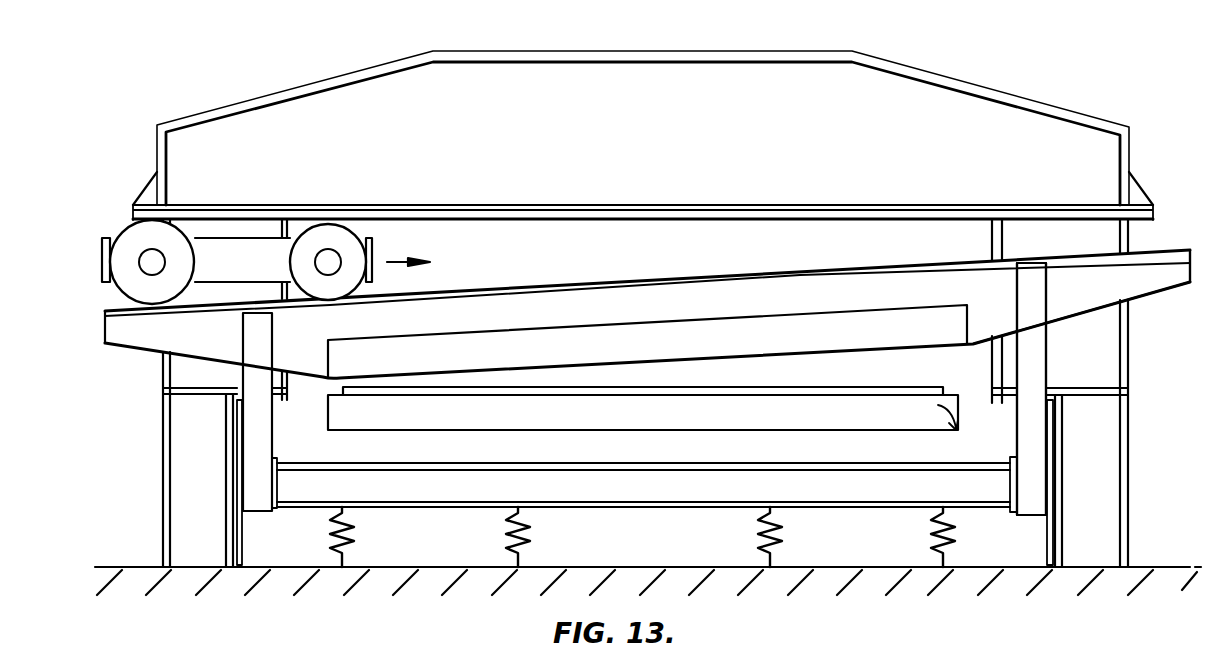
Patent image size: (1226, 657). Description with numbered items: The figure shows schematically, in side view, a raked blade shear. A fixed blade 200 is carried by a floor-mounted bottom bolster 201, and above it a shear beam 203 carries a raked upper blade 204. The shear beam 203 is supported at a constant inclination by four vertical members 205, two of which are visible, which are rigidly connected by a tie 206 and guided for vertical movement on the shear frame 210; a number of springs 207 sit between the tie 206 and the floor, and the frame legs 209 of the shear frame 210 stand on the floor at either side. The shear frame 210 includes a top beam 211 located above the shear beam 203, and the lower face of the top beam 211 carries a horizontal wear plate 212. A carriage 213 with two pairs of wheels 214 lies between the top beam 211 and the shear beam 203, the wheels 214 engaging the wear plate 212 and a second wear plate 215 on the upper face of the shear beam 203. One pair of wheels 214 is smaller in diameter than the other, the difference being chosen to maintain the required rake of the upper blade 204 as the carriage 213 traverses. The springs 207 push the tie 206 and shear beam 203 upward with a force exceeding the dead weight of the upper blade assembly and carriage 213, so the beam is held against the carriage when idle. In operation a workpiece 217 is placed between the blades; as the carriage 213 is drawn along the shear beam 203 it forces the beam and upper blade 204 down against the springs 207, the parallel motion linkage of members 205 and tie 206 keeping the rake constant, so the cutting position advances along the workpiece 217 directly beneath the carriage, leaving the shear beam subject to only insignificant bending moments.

The fixed blade 200 is at (959, 431).
The bottom bolster 201 is at (1007, 447).
The shear beam 203 is at (1143, 275).
The raked upper blade 204 is at (863, 320).
The vertical members 205 is at (253, 443).
The tie 206 is at (445, 486).
The springs 207 is at (335, 540).
The frame legs 209 is at (237, 535).
The shear frame 210 is at (165, 410).
The top beam 211 is at (953, 110).
The horizontal wear plate 212 is at (763, 218).
The carriage 213 is at (243, 230).
The wheels 214 is at (328, 230).
The wear plate 215 is at (540, 287).
The workpiece 217 is at (828, 388).